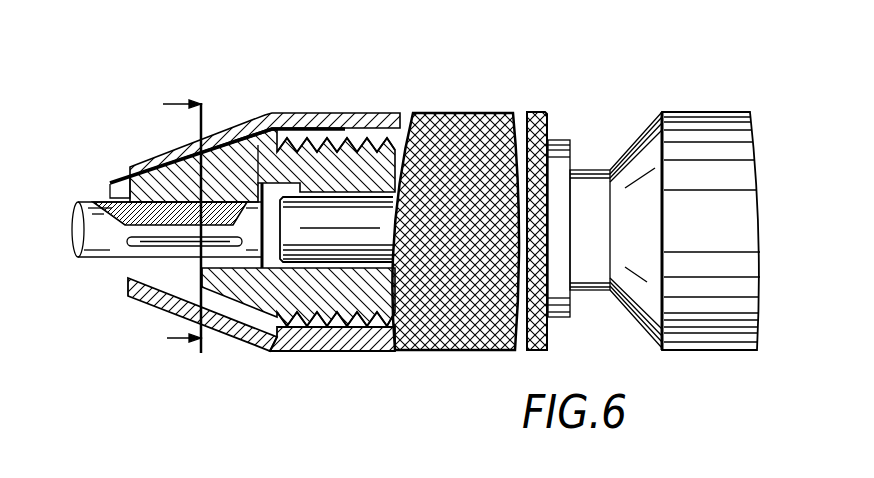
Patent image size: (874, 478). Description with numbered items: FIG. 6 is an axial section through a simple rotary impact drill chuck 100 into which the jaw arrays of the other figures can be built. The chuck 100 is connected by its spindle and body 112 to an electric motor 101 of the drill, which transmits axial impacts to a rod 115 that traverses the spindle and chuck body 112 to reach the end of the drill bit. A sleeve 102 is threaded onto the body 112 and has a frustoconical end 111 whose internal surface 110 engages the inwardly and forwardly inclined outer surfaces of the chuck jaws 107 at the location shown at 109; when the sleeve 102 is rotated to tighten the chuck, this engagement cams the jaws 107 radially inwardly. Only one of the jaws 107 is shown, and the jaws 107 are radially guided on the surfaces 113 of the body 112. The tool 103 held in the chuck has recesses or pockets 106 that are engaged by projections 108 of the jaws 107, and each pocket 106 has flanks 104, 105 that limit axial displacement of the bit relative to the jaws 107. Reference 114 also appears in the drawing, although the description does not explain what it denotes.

The rotary impact drill chuck 100 is at (265, 358).
The electric motor 101 is at (707, 127).
The sleeve 102 is at (538, 112).
The tool 103 is at (115, 246).
The flank 104 is at (240, 190).
The flank 105 is at (137, 199).
The recess or pocket 106 is at (131, 294).
The chuck jaw 107 is at (157, 165).
The projection 108 is at (83, 256).
The engagement location 109 is at (112, 186).
The internal surface 110 is at (178, 232).
The frustoconical end 111 is at (218, 328).
The spindle and body 112 is at (383, 142).
The guide surface 113 is at (236, 127).
The lower thread 114 is at (358, 318).
The rod 115 is at (338, 215).